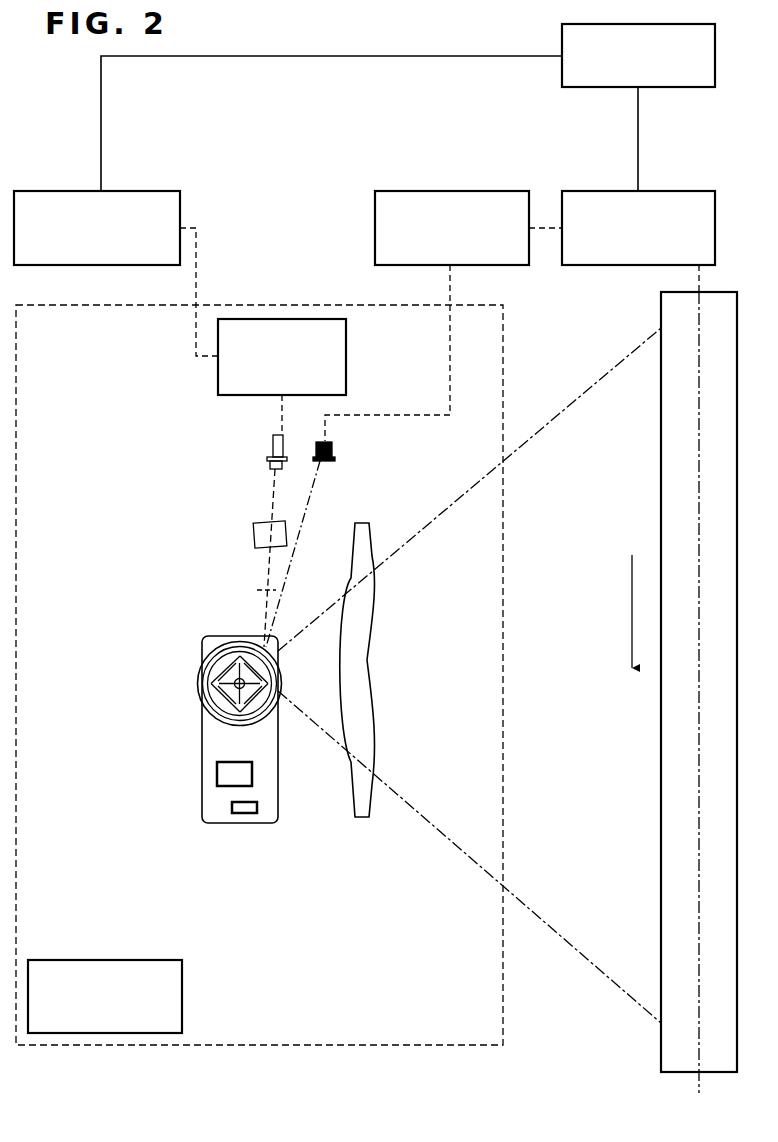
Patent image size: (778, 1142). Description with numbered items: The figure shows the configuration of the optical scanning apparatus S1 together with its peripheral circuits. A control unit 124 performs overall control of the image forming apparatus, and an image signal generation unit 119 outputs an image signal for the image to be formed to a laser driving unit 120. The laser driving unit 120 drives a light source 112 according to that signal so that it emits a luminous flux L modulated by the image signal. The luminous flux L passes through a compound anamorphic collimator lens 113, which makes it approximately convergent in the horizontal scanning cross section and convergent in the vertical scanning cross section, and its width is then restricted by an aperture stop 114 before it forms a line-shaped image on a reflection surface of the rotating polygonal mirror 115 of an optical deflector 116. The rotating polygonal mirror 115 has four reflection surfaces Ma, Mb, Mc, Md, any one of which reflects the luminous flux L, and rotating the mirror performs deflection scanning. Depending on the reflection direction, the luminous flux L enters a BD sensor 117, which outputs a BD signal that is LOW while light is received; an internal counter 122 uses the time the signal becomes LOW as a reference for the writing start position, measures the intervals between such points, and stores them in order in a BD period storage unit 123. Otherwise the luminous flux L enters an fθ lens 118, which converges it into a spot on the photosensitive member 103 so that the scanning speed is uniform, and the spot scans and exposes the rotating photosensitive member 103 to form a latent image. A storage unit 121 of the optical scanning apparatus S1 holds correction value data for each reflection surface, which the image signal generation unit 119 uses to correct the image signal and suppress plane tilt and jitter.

The photosensitive member 103 is at (668, 1073).
The light source 112 is at (268, 460).
The compound anamorphic collimator lens 113 is at (254, 530).
The aperture stop 114 is at (257, 590).
The rotating polygonal mirror 115 is at (227, 696).
The optical deflector 116 is at (202, 795).
The synchronization signal detection sensor (BD sensor) 117 is at (335, 447).
The fθ lens 118 is at (360, 818).
The image signal generation unit 119 is at (60, 191).
The laser driving unit 120 is at (346, 352).
The storage unit 121 is at (101, 960).
The internal counter 122 is at (450, 191).
The BD period storage unit 123 is at (596, 191).
The control unit 124 is at (562, 43).
The optical scanning apparatus S1 is at (237, 305).
The luminous flux L is at (537, 910).
The reflection surface Ma is at (247, 647).
The reflection surface Mb is at (212, 653).
The reflection surface Mc is at (205, 700).
The reflection surface Md is at (262, 713).